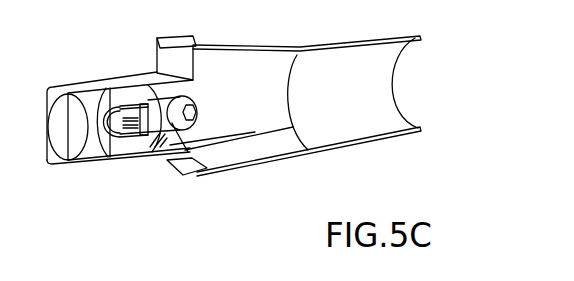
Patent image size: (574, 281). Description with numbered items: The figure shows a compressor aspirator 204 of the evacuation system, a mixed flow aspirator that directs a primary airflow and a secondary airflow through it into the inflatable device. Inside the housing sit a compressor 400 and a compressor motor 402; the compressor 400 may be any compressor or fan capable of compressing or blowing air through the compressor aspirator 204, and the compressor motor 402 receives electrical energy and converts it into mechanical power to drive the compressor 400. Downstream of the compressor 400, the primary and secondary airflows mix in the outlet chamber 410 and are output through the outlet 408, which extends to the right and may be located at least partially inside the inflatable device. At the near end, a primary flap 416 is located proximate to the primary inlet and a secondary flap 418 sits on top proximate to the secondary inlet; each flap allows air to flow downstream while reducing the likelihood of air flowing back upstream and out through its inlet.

The compressor aspirator 204 is at (305, 160).
The compressor 400 is at (112, 146).
The compressor motor 402 is at (152, 125).
The outlet 408 is at (395, 83).
The outlet chamber 410 is at (332, 108).
The primary flap 416 is at (76, 145).
The secondary flap 418 is at (157, 64).